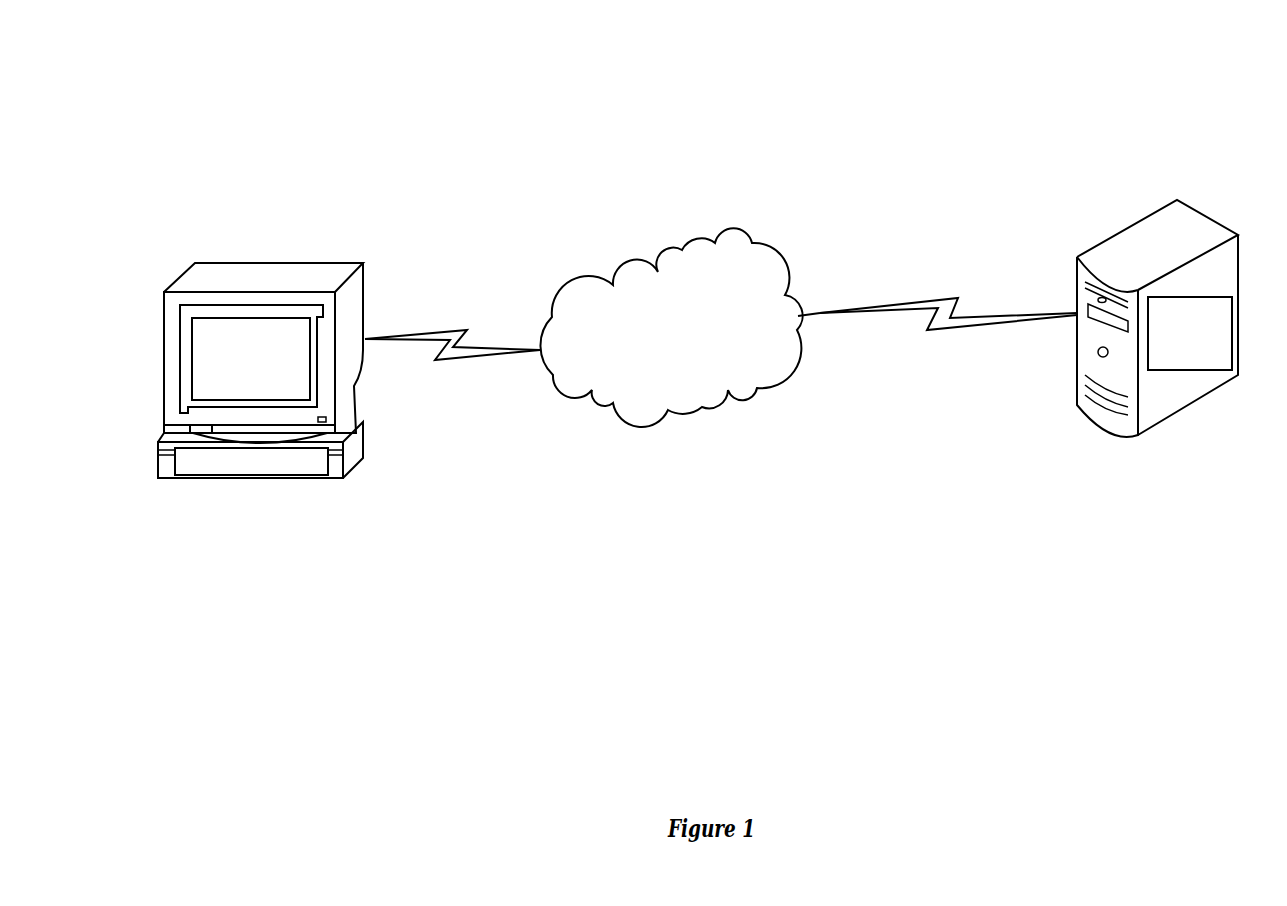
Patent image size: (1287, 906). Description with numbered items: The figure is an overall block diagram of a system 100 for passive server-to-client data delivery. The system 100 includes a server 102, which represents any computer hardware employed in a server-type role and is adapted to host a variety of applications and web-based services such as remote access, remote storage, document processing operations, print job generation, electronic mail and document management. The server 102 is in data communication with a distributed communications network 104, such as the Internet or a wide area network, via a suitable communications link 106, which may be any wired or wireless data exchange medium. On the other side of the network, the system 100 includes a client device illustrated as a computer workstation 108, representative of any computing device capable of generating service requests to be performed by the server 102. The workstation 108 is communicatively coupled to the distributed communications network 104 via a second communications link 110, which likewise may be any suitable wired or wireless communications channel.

The system 100 is at (731, 82).
The server 102 is at (1208, 213).
The distributed communications network 104 is at (738, 226).
The communications link 106 is at (933, 297).
The computer workstation 108 is at (330, 263).
The communications link 110 is at (449, 328).